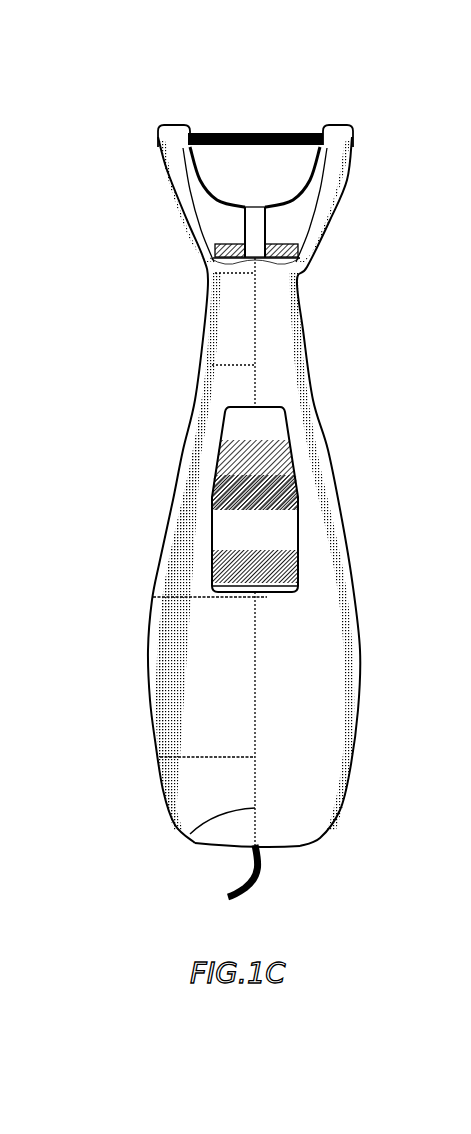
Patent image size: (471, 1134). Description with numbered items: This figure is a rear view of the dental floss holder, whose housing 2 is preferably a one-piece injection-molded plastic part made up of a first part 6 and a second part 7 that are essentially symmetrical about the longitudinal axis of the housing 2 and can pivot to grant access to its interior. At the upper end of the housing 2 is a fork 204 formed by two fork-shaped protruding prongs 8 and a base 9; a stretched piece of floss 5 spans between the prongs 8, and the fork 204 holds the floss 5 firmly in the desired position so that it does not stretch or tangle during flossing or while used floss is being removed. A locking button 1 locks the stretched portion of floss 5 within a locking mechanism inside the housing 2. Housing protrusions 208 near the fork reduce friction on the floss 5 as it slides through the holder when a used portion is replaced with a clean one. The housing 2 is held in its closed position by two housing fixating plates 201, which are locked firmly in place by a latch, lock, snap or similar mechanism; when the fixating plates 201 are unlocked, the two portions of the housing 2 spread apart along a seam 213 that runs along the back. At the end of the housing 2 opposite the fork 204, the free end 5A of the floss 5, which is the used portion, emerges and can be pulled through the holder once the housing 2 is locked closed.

The locking button 1 is at (255, 507).
The housing 2 is at (196, 376).
The floss 5 is at (254, 131).
The free end of floss 5A is at (266, 880).
The first part of housing 6 is at (208, 441).
The second part of housing 7 is at (295, 435).
The prongs 8 is at (160, 137).
The base 9 is at (268, 207).
The housing fixating plates 201 is at (216, 316).
The fork 204 is at (176, 178).
The housing protrusions 208 is at (202, 256).
The seam 213 is at (192, 833).